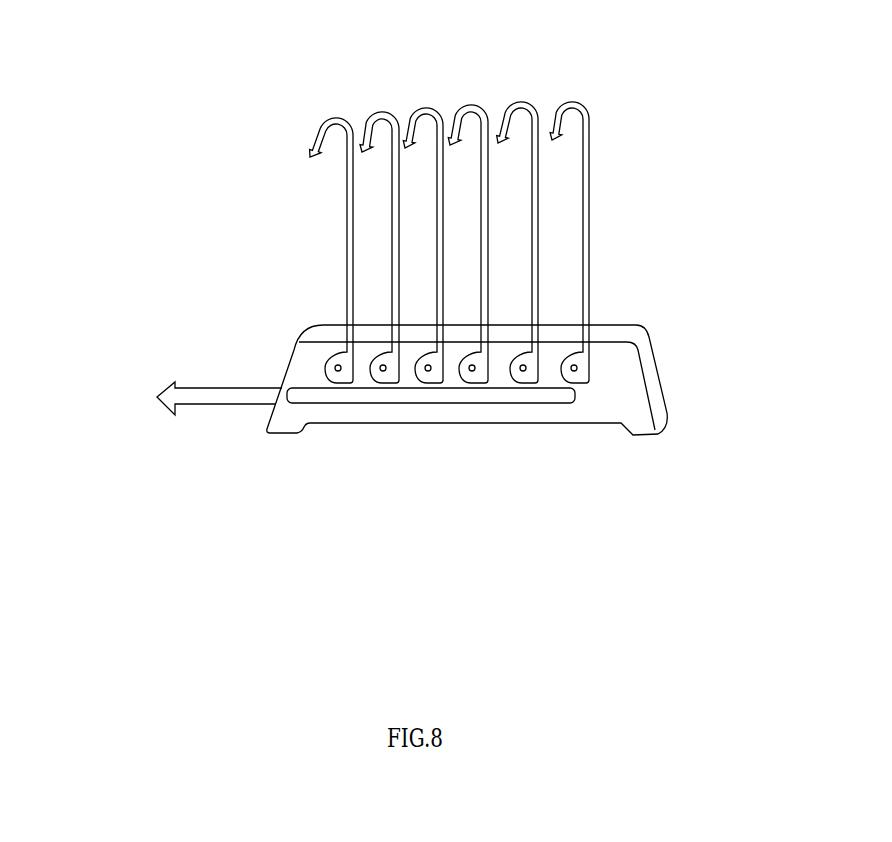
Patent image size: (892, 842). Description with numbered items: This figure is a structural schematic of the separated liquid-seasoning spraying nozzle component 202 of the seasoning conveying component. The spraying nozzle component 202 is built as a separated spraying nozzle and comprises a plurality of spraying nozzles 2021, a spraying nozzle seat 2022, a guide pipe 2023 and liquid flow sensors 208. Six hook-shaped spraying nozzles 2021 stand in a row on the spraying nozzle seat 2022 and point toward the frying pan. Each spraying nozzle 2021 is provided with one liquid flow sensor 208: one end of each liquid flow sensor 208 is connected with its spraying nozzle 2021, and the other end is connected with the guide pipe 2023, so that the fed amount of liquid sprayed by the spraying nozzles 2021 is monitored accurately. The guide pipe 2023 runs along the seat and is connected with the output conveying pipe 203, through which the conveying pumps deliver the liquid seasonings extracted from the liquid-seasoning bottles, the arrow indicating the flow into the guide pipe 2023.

The spraying nozzle component 202 is at (350, 80).
The spraying nozzles 2021 is at (533, 107).
The spraying nozzle seat 2022 is at (613, 357).
The guide pipe 2023 is at (395, 400).
The liquid flow sensors 208 is at (345, 365).
The conveying pipes 203 is at (227, 390).